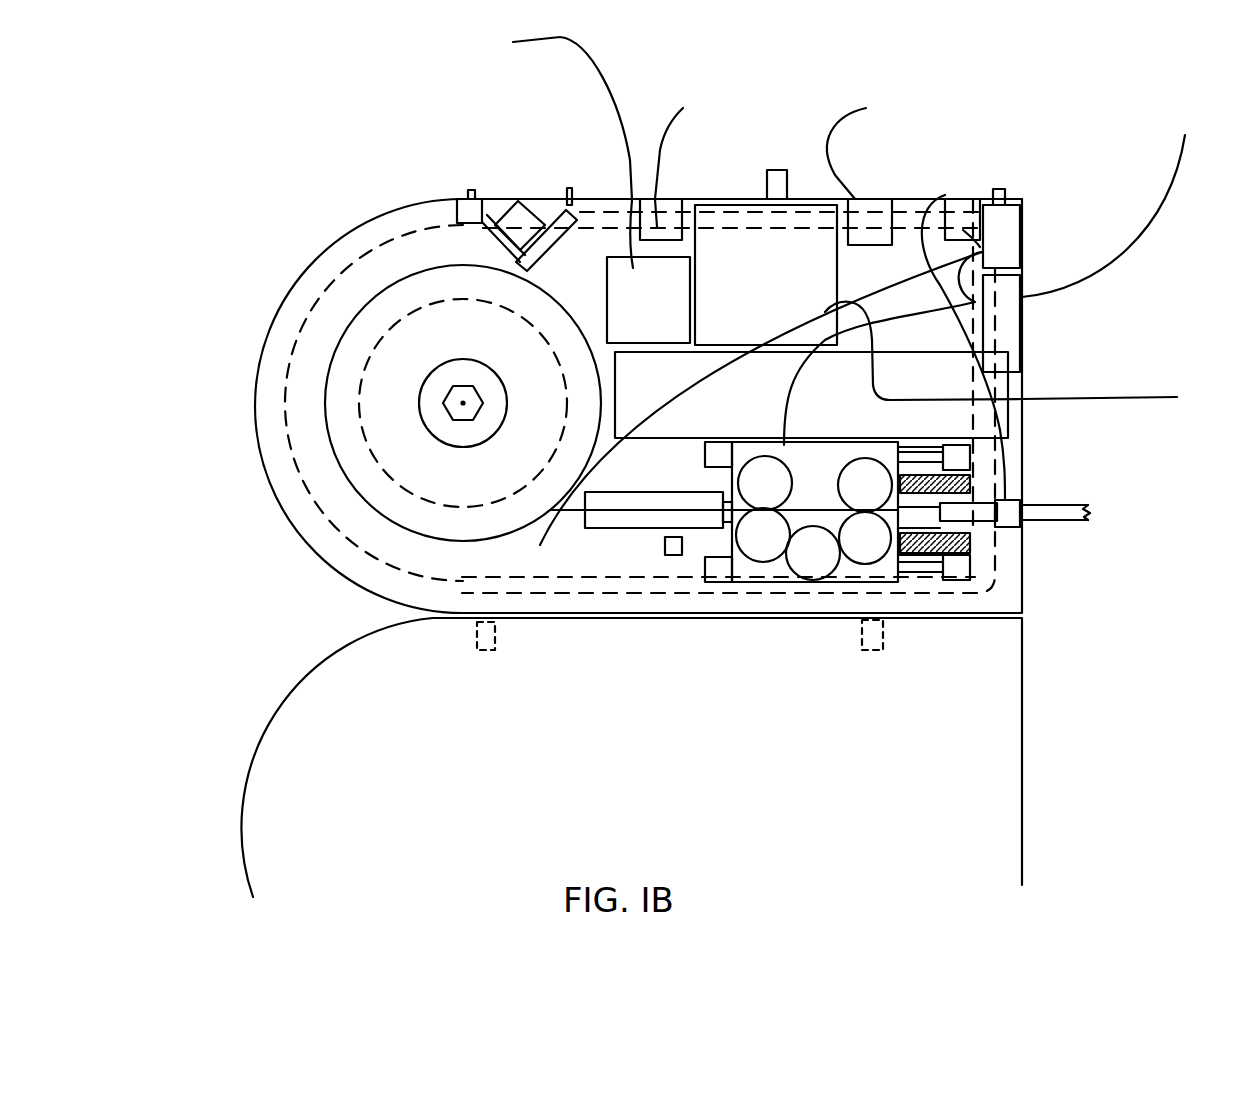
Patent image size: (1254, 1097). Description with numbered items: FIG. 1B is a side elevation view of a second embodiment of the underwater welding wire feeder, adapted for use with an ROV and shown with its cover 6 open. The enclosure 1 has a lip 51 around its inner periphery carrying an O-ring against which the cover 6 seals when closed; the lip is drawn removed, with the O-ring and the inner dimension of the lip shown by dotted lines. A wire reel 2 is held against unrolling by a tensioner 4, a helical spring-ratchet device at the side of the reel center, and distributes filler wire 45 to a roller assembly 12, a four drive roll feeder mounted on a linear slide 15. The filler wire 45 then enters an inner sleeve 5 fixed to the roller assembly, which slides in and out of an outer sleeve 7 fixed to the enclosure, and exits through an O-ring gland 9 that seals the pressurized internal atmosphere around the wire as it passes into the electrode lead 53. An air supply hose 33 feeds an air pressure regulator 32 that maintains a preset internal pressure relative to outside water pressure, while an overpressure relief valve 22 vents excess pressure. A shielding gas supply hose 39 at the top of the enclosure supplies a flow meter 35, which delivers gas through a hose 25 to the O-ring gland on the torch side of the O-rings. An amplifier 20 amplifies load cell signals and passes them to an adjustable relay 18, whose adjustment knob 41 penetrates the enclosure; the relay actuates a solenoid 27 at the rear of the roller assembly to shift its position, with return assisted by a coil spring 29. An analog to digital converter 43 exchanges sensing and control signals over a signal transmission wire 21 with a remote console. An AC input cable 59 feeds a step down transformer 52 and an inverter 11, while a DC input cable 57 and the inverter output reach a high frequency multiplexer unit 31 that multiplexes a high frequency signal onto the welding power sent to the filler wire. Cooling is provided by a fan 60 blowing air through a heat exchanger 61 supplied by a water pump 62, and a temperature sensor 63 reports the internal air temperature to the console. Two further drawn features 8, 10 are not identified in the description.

The enclosure 1 is at (586, 197).
The wire reel 2 is at (600, 372).
The tensioner 4 is at (503, 389).
The inner sleeve 5 is at (917, 520).
The cover 6 is at (285, 715).
The outer sleeve 7 is at (947, 507).
The housing 8 is at (378, 232).
The O-ring gland 9 is at (1022, 502).
The mounting foot 10 is at (477, 637).
The inverter 11 is at (682, 428).
The roller assembly 12 is at (802, 452).
The linear slide 15 is at (936, 445).
The adjustable relay 18 is at (1010, 236).
The amplifier 20 is at (965, 199).
The signal transmission wire 21 is at (1200, 190).
The overpressure relief valve 22 is at (768, 172).
The hose 25 is at (1004, 500).
The solenoid 27 is at (613, 523).
The coil spring 29 is at (968, 543).
The high frequency multiplexer unit 31 is at (725, 330).
The air pressure regulator 32 is at (670, 210).
The air supply hose 33 is at (688, 155).
The flow meter 35 is at (872, 210).
The shielding gas supply hose 39 is at (864, 140).
The adjustment knob 41 is at (1005, 196).
The analog to digital converter 43 is at (1013, 325).
The filler wire 45 is at (747, 414).
The lip 51 is at (283, 361).
The step down transformer 52 is at (630, 263).
The electrode lead 53 is at (1082, 522).
The DC input cable 57 is at (1133, 398).
The AC input cable 59 is at (553, 145).
The fan 60 is at (508, 218).
The heat exchanger 61 is at (570, 197).
The water pump 62 is at (465, 198).
The temperature sensor 63 is at (672, 555).